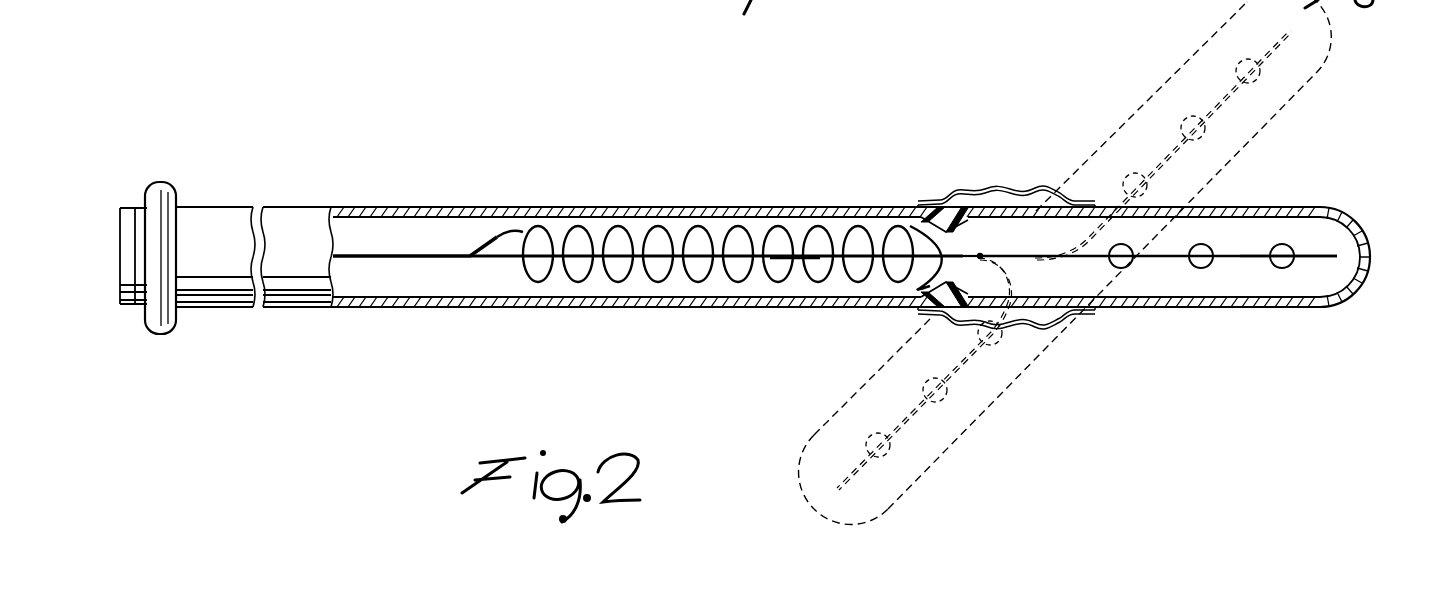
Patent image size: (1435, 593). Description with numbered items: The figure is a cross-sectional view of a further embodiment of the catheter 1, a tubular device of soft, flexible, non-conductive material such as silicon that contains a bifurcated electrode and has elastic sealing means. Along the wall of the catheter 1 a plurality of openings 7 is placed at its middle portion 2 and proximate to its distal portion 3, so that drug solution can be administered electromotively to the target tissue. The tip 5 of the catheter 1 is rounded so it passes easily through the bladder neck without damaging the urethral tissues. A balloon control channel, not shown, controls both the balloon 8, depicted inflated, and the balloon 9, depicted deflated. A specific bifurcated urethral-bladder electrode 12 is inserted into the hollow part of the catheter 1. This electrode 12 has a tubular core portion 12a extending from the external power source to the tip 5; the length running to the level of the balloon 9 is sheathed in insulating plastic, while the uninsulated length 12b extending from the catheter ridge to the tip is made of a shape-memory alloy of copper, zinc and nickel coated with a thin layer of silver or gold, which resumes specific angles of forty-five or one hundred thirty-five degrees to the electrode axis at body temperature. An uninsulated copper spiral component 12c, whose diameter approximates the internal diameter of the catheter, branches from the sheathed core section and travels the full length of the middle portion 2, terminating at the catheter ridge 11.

The catheter 1 is at (471, 228).
The middle portion 2 is at (650, 283).
The distal portion 3 is at (1210, 162).
The tip 5 is at (1373, 258).
The openings 7 is at (877, 250).
The balloon 8 is at (160, 326).
The balloon 9 is at (995, 190).
The catheter ridge 11 is at (943, 210).
The bifurcated urethral-bladder electrode 12 is at (468, 258).
The tubular core portion 12a is at (793, 277).
The uninsulated electrode portion 12b is at (1240, 258).
The uninsulated spiral component 12c is at (720, 227).